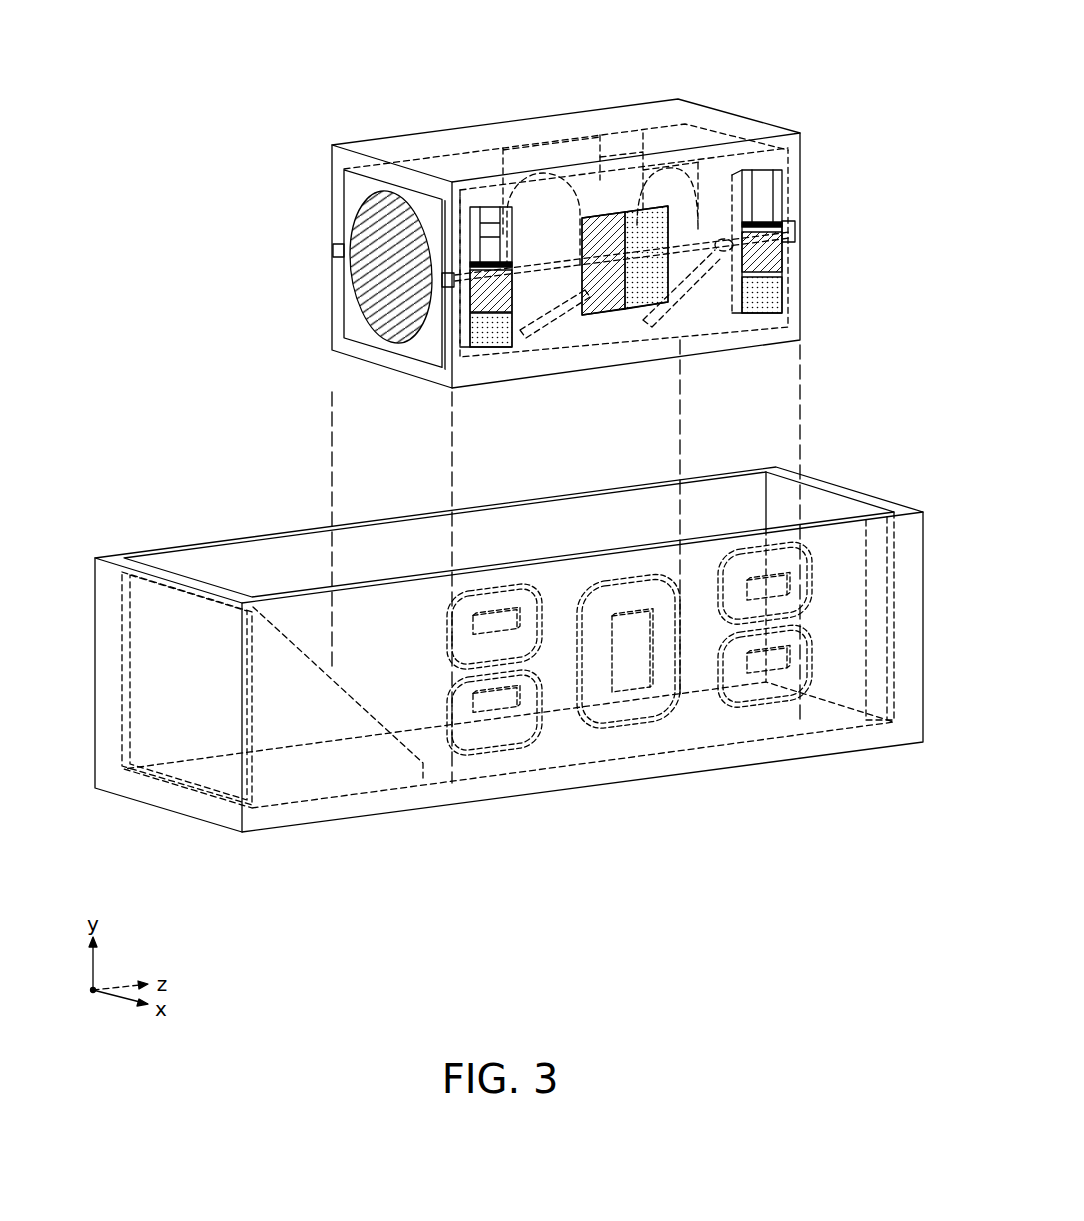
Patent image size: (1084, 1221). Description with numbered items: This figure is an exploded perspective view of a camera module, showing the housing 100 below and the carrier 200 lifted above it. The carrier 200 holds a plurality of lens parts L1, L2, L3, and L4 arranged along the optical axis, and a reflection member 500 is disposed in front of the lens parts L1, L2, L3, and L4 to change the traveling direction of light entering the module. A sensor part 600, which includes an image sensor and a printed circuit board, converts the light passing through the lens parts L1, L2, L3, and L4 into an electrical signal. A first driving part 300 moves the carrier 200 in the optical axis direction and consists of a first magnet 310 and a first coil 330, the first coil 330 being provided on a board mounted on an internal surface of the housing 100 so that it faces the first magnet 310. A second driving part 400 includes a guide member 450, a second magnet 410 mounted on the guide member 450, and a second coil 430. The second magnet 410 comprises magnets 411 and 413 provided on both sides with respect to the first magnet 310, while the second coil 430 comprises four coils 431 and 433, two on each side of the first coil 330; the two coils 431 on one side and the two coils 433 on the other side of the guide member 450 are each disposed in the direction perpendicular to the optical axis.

The housing 100 is at (128, 783).
The carrier 200 is at (372, 147).
The first driving part 300 is at (477, 412).
The first magnet 310 is at (647, 228).
The first coil 330 is at (613, 592).
The second driving part 400 is at (457, 546).
The second magnet 410 is at (482, 322).
The magnet 411 is at (497, 335).
The magnet 413 is at (742, 287).
The second coil 430 is at (490, 584).
The coils 431 is at (508, 730).
The coils 433 is at (765, 708).
The guide member 450 is at (190, 303).
The reflection member 500 is at (190, 762).
The sensor part 600 is at (832, 497).
The lens part L1 is at (443, 150).
The lens part L2 is at (533, 135).
The lens part L3 is at (637, 135).
The lens part L4 is at (678, 125).